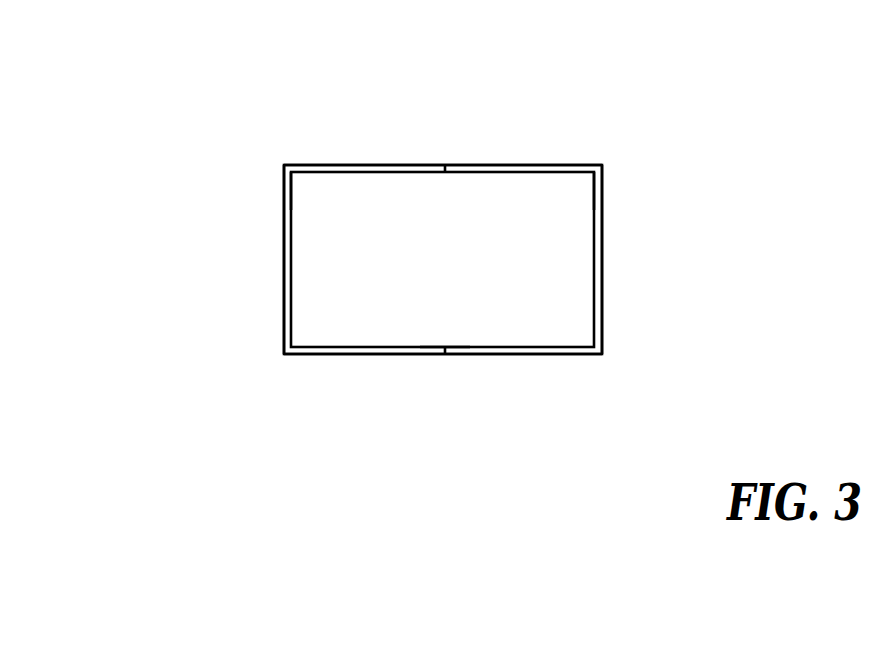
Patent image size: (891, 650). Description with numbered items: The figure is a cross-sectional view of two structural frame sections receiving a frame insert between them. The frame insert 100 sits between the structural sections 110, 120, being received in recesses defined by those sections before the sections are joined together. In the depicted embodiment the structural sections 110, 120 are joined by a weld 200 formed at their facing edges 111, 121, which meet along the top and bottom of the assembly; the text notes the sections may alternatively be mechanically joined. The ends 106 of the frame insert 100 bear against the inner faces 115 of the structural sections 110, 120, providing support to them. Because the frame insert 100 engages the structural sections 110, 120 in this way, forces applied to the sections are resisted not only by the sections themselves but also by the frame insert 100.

The frame insert 100 is at (312, 255).
The ends of the frame insert 106 is at (285, 188).
The structural section 110 is at (284, 318).
The structural section 120 is at (602, 320).
The facing edge 111 is at (440, 164).
The facing edge 121 is at (446, 164).
The inner faces 115 is at (290, 207).
The weld 200 is at (445, 163).